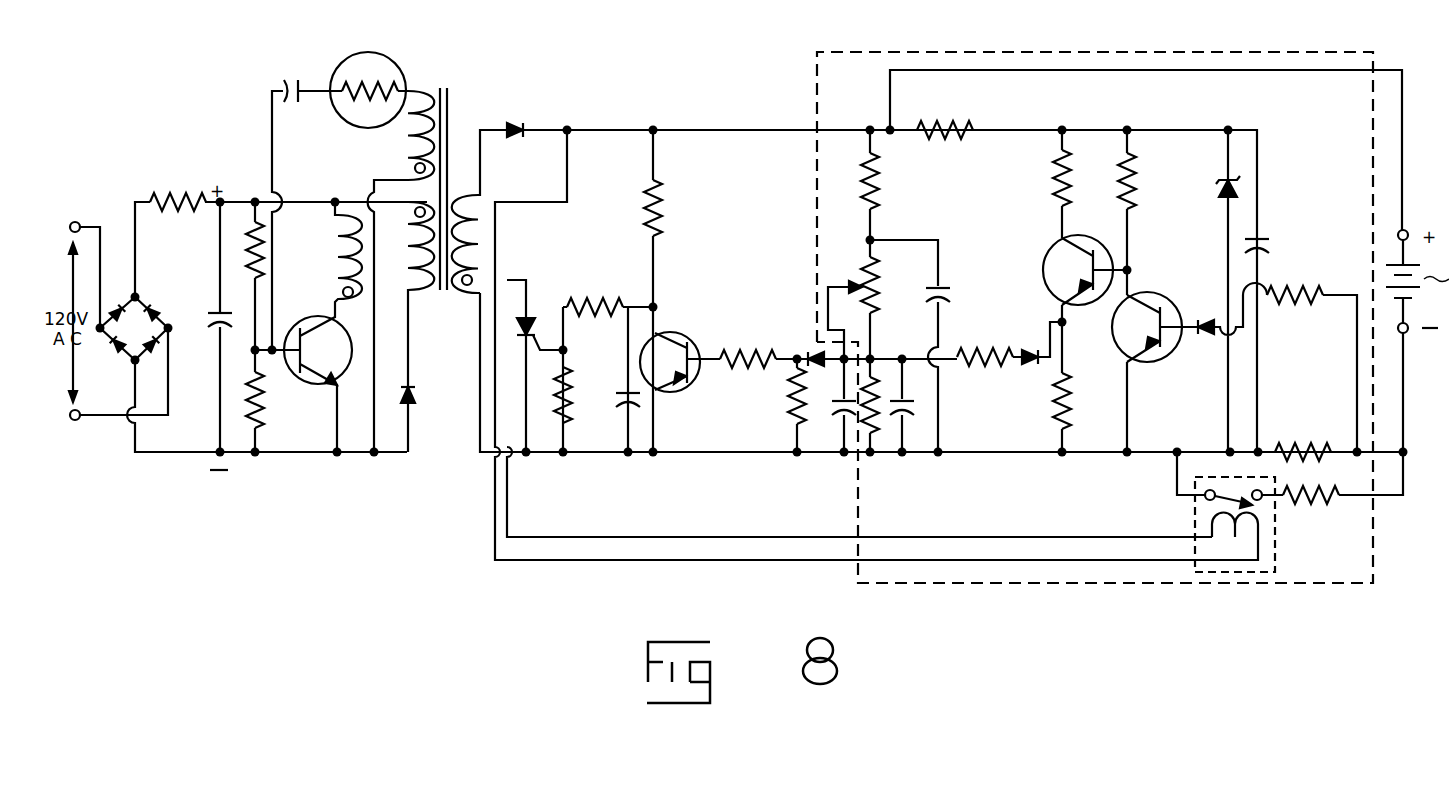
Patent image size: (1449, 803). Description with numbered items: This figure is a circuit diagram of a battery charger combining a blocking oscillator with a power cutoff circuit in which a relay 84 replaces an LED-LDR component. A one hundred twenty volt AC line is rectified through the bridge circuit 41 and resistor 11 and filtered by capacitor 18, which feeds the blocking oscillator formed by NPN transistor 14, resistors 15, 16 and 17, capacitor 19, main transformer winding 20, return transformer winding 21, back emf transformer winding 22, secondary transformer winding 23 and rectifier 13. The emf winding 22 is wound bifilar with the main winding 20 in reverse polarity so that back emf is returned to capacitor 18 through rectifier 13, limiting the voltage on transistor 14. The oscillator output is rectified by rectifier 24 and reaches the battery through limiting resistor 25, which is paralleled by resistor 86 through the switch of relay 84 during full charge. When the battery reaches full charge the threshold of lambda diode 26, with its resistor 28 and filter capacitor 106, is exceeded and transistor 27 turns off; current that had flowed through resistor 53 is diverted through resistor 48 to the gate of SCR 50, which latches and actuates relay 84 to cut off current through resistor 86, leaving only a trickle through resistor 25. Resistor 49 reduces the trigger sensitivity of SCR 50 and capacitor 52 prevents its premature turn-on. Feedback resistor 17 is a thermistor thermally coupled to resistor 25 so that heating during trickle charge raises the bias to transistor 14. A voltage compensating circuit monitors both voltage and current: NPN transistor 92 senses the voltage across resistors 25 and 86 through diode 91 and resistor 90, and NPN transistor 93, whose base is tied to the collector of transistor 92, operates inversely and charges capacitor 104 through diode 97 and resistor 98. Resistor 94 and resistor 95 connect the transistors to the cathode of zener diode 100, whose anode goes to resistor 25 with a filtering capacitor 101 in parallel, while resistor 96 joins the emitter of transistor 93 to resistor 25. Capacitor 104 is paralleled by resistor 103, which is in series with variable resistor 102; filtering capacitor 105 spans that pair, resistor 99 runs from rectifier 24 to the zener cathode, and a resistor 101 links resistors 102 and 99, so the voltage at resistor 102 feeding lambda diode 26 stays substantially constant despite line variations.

The resistor 11 is at (170, 195).
The bridge circuit 41 is at (156, 300).
The resistor 15 is at (246, 250).
The resistor 16 is at (244, 402).
The filtering capacitor 18 is at (214, 340).
The NPN transistor 14 is at (307, 390).
The resistor 17 is at (366, 86).
The capacitor 19 is at (293, 105).
The return transformer winding 21 is at (405, 122).
The main transformer winding 20 is at (334, 281).
The back emf transformer winding 22 is at (410, 272).
The secondary transformer winding 23 is at (467, 300).
The rectifier 13 is at (414, 402).
The rectifier 24 is at (514, 120).
The resistor 53 is at (664, 205).
The resistor 48 is at (594, 293).
The SCR 50 is at (534, 316).
The resistor 49 is at (566, 389).
The capacitor 52 is at (624, 411).
The NPN transistor 27 is at (688, 322).
The resistor 28 is at (745, 345).
The lambda diode 26 is at (812, 371).
The filter capacitor 106 is at (848, 420).
The resistor 103 is at (880, 446).
The capacitor 104 is at (906, 416).
The variable resistor 102 is at (880, 292).
The filtering capacitor / resistor 101 is at (878, 201).
The filtering capacitor 105 is at (946, 276).
The resistor 99 is at (952, 140).
The resistor 98 is at (974, 344).
The diode 97 is at (1030, 372).
The resistor 96 is at (1071, 409).
The NPN transistor 93 is at (1083, 312).
The resistor 95 is at (1054, 209).
The resistor 94 is at (1132, 180).
The zener diode 100 is at (1222, 203).
The resistor 90 is at (1307, 284).
The diode 91 is at (1207, 345).
The NPN transistor 92 is at (1160, 372).
The limiting resistor 25 is at (1294, 434).
The resistor 86 is at (1304, 504).
The relay 84 is at (1195, 514).